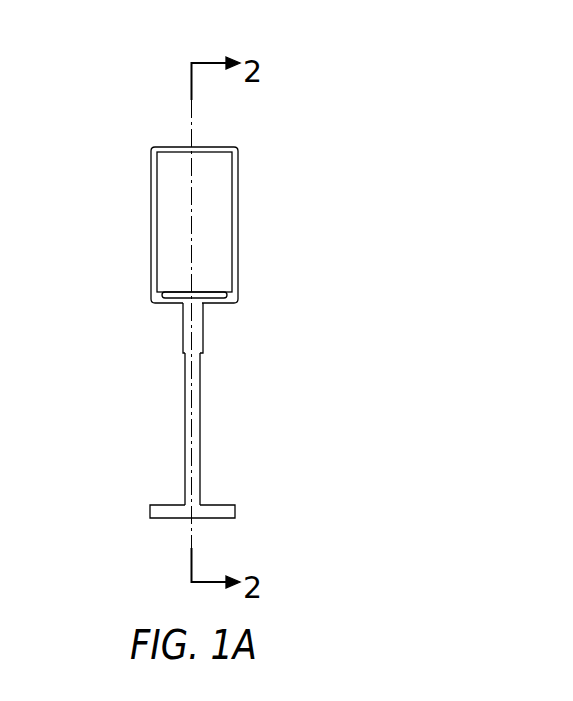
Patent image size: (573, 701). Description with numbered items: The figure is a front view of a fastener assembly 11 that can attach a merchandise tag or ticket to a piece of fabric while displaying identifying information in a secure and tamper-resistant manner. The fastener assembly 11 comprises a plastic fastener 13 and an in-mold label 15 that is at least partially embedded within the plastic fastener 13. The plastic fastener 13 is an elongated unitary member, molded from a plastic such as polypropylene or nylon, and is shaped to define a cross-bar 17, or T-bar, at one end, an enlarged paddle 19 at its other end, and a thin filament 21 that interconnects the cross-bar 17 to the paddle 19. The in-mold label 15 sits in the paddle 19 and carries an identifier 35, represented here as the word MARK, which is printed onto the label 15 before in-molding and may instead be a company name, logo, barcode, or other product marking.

The fastener assembly 11 is at (150, 171).
The plastic fastener 13 is at (203, 345).
The in-mold label 15 is at (232, 192).
The cross-bar 17 is at (235, 507).
The enlarged paddle 19 is at (233, 295).
The thin filament 21 is at (200, 395).
The identifier 35 is at (146, 214).